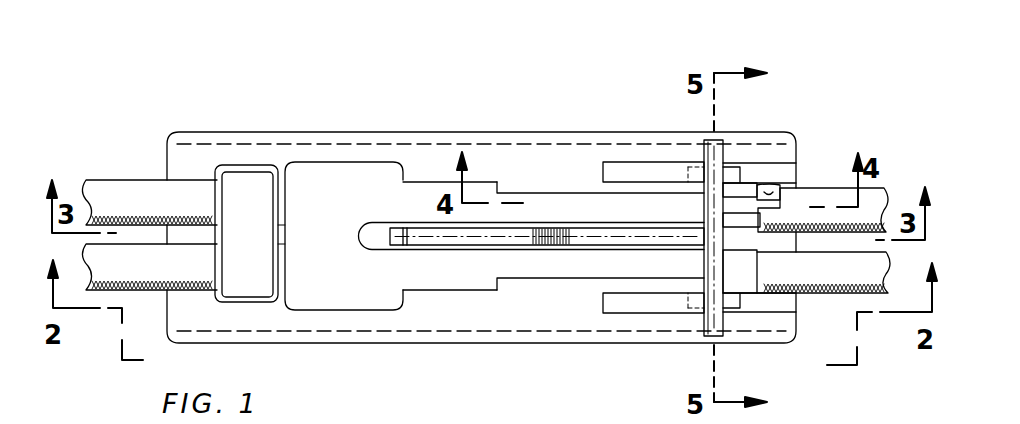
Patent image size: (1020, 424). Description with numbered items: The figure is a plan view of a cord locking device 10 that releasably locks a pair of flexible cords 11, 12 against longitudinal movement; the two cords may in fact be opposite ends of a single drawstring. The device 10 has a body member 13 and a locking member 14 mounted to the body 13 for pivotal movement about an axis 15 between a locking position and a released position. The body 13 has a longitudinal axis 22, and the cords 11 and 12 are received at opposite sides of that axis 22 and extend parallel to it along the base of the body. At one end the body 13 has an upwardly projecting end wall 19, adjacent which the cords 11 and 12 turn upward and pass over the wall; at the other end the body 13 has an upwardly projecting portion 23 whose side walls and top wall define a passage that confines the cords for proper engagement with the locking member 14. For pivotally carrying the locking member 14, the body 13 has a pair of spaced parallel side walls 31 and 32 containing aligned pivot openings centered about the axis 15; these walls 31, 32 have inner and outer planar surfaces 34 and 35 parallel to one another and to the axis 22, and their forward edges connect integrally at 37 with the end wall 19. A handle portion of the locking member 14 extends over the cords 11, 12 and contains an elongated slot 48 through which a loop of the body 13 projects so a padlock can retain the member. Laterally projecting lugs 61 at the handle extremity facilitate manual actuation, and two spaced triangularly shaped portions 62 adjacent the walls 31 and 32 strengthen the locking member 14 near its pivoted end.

The cord locking device 10 is at (592, 118).
The flexible cord 11 is at (132, 186).
The flexible cord 12 is at (155, 288).
The body member 13 is at (508, 322).
The locking member 14 is at (384, 298).
The pivotal axis 15 is at (713, 202).
The end wall 19 is at (792, 188).
The longitudinal axis 22 is at (463, 238).
The upwardly projecting portion 23 is at (240, 182).
The side wall 31 is at (637, 165).
The side wall 32 is at (608, 302).
The inner vertical planar surface 34 is at (627, 292).
The outer vertical planar surface 35 is at (660, 315).
The connection location 37 is at (770, 190).
The slot 48 is at (375, 232).
The lugs 61 is at (332, 176).
The triangularly shaped portions 62 is at (530, 285).